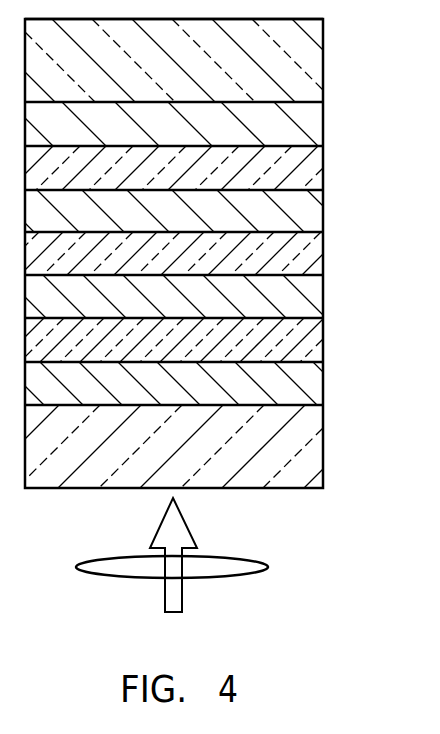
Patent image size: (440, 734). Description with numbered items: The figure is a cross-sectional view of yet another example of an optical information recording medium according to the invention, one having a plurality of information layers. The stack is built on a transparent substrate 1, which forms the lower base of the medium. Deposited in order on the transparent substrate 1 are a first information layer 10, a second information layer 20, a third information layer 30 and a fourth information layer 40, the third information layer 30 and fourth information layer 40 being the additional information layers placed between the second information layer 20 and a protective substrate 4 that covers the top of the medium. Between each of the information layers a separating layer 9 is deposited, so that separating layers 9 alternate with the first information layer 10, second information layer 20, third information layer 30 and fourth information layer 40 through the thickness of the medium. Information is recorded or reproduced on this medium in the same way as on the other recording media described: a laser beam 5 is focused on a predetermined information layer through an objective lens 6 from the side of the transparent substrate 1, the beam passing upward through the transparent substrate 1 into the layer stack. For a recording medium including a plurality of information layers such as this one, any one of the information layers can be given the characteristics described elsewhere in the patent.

The protective substrate 4 is at (323, 65).
The fourth information layer 40 is at (323, 130).
The separating layer 9 is at (323, 170).
The third information layer 30 is at (323, 217).
The second information layer 20 is at (323, 302).
The first information layer 10 is at (323, 383).
The transparent substrate 1 is at (322, 449).
The laser beam 5 is at (182, 598).
The objective lens 6 is at (270, 564).